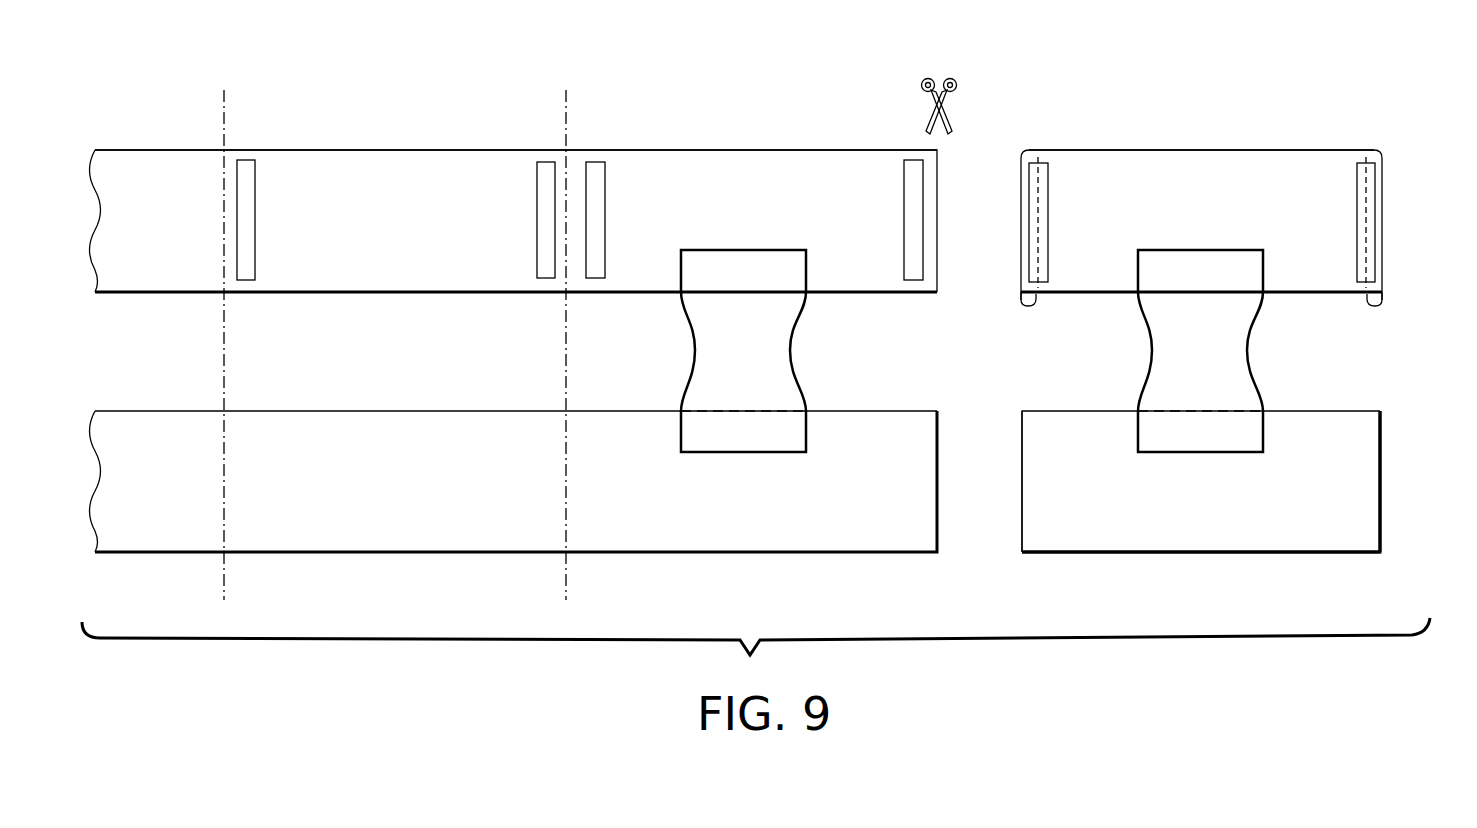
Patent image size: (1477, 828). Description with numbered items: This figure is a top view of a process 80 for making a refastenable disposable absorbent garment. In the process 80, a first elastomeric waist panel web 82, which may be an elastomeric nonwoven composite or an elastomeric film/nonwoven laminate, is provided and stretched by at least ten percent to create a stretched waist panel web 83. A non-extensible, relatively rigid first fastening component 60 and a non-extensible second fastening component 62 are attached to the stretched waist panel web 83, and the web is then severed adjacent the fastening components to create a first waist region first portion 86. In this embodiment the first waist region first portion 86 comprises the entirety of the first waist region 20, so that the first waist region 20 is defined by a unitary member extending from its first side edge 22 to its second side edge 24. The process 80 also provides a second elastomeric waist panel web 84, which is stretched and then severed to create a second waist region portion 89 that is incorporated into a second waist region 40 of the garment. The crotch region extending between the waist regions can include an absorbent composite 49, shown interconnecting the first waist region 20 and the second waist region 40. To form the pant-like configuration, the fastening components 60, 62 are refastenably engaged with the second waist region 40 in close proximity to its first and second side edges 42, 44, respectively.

The process 80 is at (438, 66).
The first elastomeric waist panel web 82 is at (122, 150).
The stretched waist panel web 83 is at (202, 150).
The second elastomeric waist panel web 84 is at (370, 552).
The first waist region first portion 86 is at (1082, 150).
The second waist region portion 89 is at (1078, 552).
The first waist region 20 is at (1300, 150).
The first side edge 22 is at (1038, 301).
The second side edge 24 is at (1365, 301).
The second waist region 40 is at (1303, 552).
The first side edge 42 is at (1022, 477).
The second side edge 44 is at (1380, 477).
The absorbent composite 49 is at (790, 347).
The first fastening component 60 is at (537, 217).
The second fastening component 62 is at (255, 215).